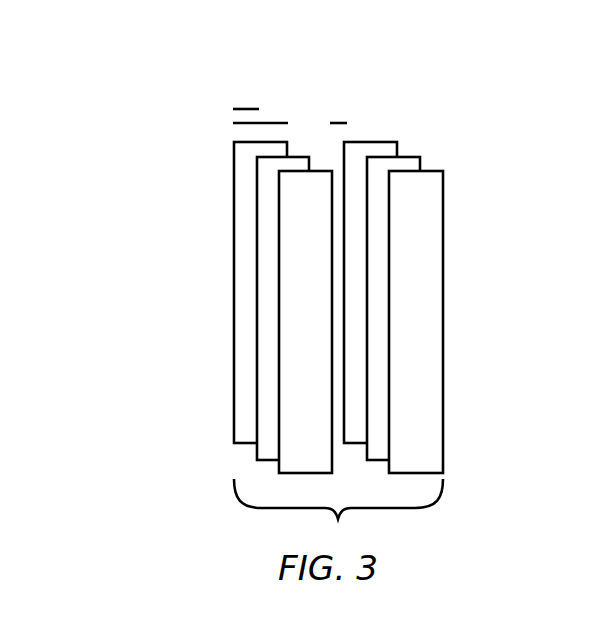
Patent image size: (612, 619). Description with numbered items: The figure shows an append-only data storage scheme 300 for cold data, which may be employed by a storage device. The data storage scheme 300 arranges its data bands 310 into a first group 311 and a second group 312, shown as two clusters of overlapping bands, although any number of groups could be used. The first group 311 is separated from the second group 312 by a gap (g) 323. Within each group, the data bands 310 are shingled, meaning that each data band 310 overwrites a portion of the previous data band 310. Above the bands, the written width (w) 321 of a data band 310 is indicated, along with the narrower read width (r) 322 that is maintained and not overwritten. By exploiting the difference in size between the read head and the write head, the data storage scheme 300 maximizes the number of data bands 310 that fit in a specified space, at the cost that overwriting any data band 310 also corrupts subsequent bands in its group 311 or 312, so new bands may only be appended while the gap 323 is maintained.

The append-only data storage scheme 300 is at (285, 280).
The data bands 310 is at (319, 332).
The first group 311 is at (445, 160).
The second group 312 is at (195, 205).
The written width 321 is at (287, 102).
The read width 322 is at (247, 92).
The gap 323 is at (352, 106).